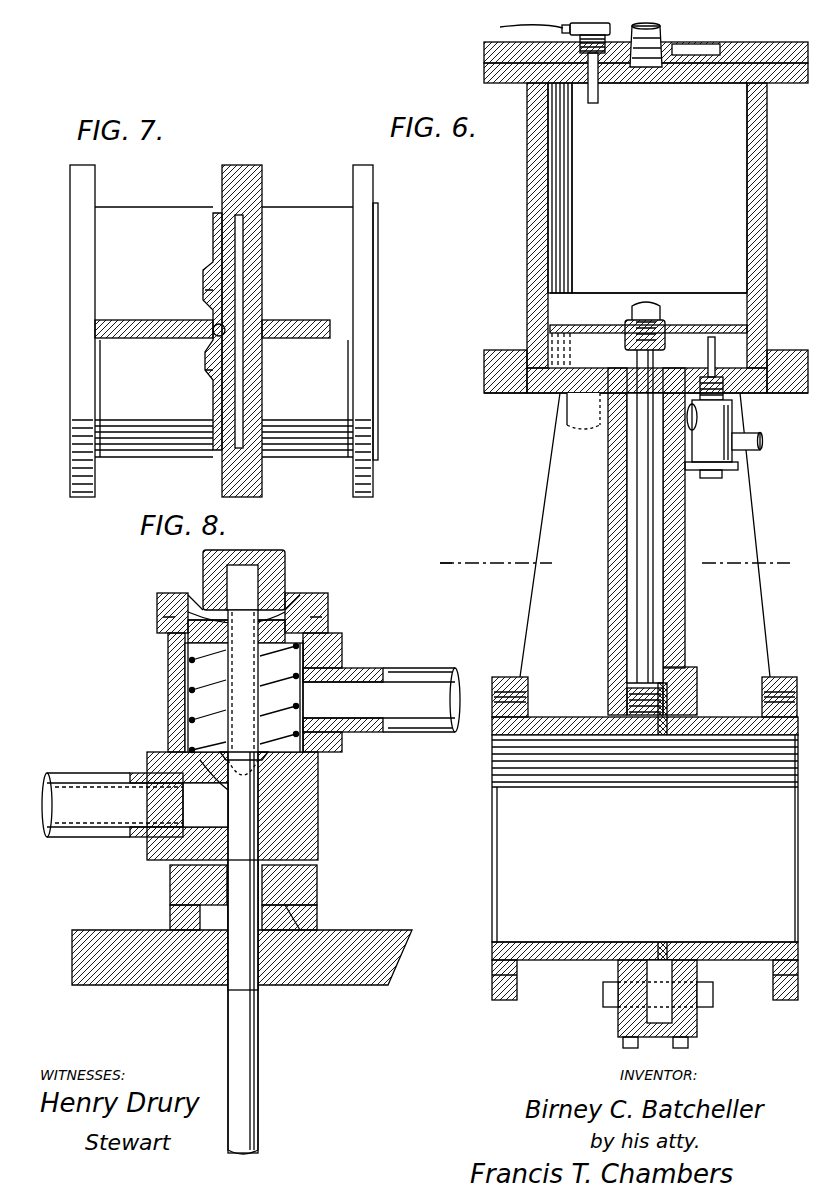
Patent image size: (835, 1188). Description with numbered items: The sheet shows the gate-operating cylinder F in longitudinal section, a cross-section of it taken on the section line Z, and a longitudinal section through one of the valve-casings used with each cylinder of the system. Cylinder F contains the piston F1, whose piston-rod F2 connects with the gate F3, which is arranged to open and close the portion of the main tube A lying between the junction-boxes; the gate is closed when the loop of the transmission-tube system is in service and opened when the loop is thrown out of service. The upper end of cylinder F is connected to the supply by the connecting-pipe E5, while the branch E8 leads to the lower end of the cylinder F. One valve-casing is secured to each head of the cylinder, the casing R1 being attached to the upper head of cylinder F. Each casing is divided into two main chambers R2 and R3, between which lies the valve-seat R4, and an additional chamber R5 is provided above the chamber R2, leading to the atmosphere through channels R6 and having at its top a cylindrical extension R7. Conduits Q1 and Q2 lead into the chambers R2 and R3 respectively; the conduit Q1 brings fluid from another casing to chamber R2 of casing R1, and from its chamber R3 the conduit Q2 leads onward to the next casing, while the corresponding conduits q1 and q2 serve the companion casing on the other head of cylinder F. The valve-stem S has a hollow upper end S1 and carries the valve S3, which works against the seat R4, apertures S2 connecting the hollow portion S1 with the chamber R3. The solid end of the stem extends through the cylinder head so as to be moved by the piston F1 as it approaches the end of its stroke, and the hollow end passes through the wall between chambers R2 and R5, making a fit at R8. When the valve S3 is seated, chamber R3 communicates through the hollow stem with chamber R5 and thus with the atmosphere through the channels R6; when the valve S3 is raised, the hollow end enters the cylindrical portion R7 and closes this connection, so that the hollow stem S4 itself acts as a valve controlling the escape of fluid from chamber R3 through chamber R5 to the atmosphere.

In FIG. 6, the main tube A is at (645, 862).
In FIG. 7, the main tube A is at (224, 331).
In FIG. 6, the cylinder F is at (659, 188).
In FIG. 6, the piston F1 is at (648, 321).
In FIG. 6, the piston-rod F2 is at (642, 588).
In FIG. 7, the piston-rod F2 is at (197, 310).
In FIG. 6, the gate F3 is at (667, 822).
In FIG. 7, the gate F3 is at (235, 261).
In FIG. 6, the connecting-pipe E5 is at (662, 33).
In FIG. 6, the branch pipe E8 is at (570, 407).
In FIG. 8, the conduit Q1 is at (381, 700).
In FIG. 6, the conduit Q2 is at (516, 31).
In FIG. 8, the conduit Q2 is at (135, 805).
In FIG. 6, the conduit q1 is at (762, 441).
In FIG. 6, the conduit q2 is at (690, 418).
In FIG. 6, the valve-stem S is at (647, 211).
In FIG. 8, the valve-stem S is at (243, 883).
In FIG. 8, the hollow portion of valve-stem S1 is at (225, 705).
In FIG. 8, the apertures S2 is at (253, 781).
In FIG. 8, the valve S3 is at (256, 744).
In FIG. 8, the hollow stem S4 is at (163, 612).
In FIG. 8, the valve-casing R1 is at (242, 881).
In FIG. 8, the main chamber R2 is at (287, 696).
In FIG. 8, the main chamber R3 is at (240, 793).
In FIG. 8, the valve-seat R4 is at (198, 805).
In FIG. 8, the additional chamber R5 is at (310, 598).
In FIG. 8, the channels R6 is at (315, 580).
In FIG. 8, the cylindrical extension R7 is at (244, 580).
In FIG. 8, the fit R8 is at (328, 620).
In FIG. 6, the section line Z is at (623, 575).
In FIG. 8, the section line Z is at (447, 573).